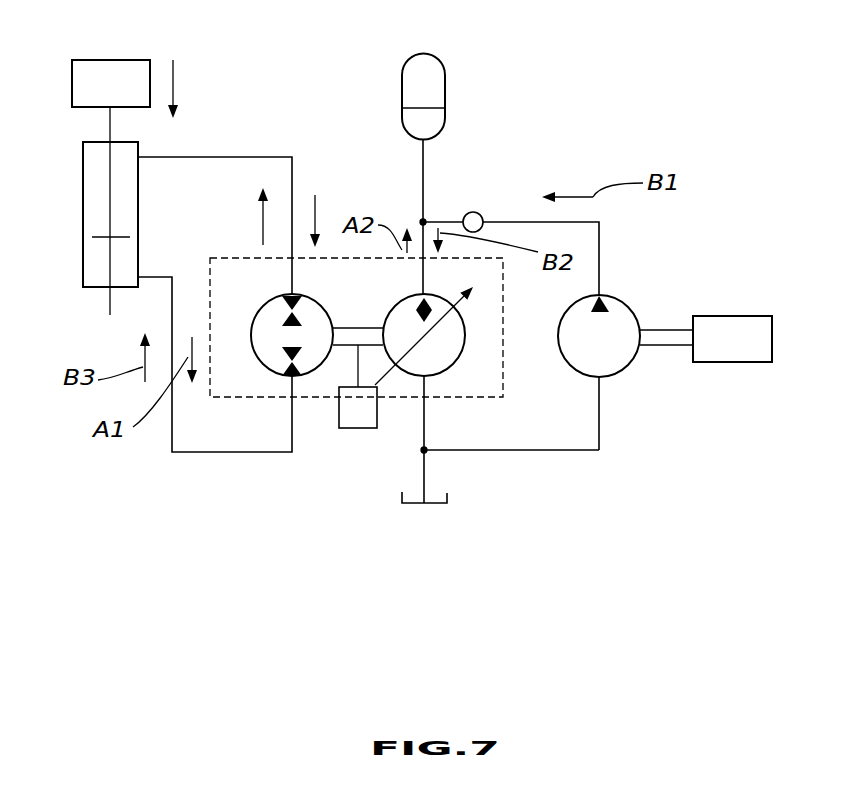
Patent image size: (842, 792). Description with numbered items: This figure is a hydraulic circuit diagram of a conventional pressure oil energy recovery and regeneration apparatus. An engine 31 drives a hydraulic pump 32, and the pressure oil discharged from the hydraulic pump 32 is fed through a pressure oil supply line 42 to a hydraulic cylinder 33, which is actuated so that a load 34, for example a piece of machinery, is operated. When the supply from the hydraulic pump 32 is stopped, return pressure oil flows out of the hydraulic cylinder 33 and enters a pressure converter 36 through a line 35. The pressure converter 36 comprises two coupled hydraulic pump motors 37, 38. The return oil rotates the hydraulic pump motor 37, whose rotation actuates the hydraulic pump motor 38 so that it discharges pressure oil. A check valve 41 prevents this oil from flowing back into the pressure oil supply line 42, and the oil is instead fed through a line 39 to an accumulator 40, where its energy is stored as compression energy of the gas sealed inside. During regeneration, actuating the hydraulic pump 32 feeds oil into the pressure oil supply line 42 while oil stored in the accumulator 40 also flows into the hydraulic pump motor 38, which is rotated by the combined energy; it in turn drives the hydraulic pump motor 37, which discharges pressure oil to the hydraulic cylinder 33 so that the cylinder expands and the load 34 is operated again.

The engine 31 is at (712, 362).
The hydraulic pump 32 is at (620, 298).
The hydraulic cylinder 33 is at (138, 148).
The load 34 is at (140, 60).
The line 35 is at (168, 312).
The pressure converter 36 is at (420, 419).
The hydraulic pump motor 37 is at (270, 372).
The hydraulic pump motor 38 is at (443, 370).
The line 39 is at (423, 175).
The accumulator 40 is at (448, 85).
The check valve 41 is at (477, 212).
The pressure oil supply line 42 is at (575, 222).